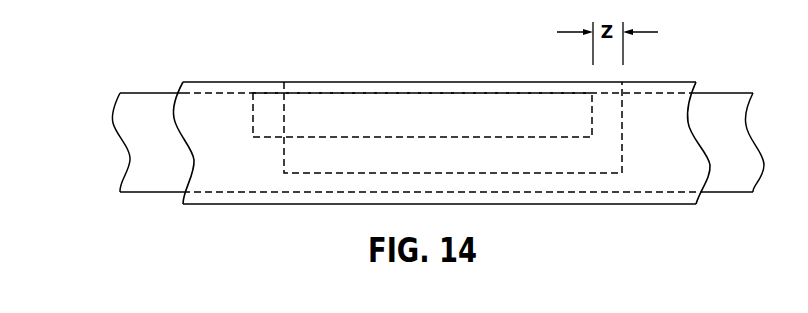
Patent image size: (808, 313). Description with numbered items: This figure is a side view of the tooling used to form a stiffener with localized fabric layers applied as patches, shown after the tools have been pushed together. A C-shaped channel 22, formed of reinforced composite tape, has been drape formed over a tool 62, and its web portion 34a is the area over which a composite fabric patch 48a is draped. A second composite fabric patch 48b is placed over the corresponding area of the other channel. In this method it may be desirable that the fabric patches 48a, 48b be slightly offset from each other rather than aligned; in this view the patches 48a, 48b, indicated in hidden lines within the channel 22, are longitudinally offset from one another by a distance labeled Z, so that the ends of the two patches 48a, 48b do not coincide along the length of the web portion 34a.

The C-shaped channel 22 is at (243, 163).
The web portion 34a is at (218, 112).
The composite fabric patch 48a is at (537, 137).
The composite fabric patch 48b is at (604, 172).
The tool 62 is at (140, 112).